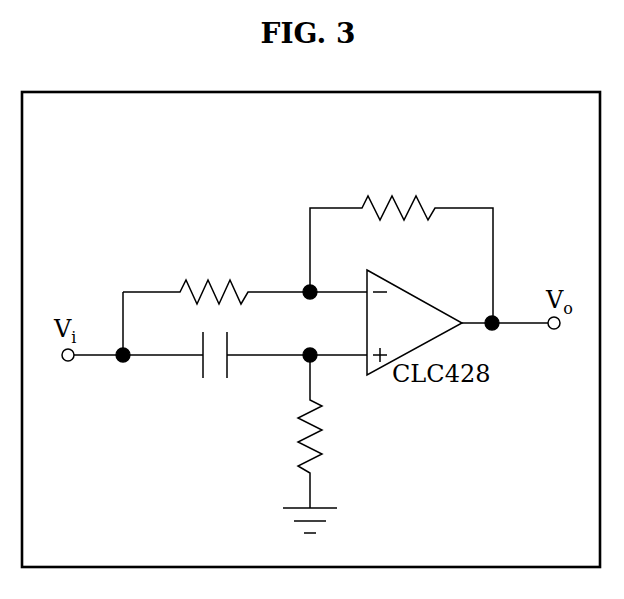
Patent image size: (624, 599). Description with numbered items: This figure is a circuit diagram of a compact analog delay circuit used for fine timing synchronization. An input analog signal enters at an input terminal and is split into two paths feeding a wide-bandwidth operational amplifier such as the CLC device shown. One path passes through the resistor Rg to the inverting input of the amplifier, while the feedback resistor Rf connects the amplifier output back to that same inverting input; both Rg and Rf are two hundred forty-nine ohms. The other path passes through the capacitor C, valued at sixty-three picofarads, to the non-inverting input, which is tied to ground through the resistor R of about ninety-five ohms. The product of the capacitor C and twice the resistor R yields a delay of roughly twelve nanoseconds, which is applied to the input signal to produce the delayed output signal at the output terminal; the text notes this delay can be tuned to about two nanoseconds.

The resistor Rf is at (401, 232).
The resistor Rg is at (216, 264).
The capacitor C is at (216, 384).
The resistor R is at (332, 444).